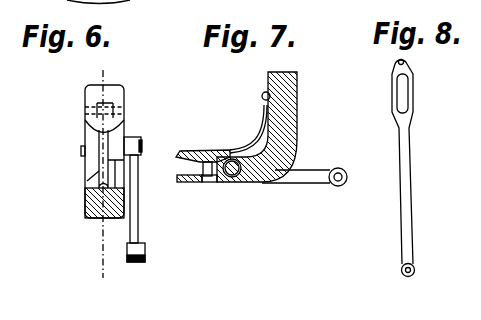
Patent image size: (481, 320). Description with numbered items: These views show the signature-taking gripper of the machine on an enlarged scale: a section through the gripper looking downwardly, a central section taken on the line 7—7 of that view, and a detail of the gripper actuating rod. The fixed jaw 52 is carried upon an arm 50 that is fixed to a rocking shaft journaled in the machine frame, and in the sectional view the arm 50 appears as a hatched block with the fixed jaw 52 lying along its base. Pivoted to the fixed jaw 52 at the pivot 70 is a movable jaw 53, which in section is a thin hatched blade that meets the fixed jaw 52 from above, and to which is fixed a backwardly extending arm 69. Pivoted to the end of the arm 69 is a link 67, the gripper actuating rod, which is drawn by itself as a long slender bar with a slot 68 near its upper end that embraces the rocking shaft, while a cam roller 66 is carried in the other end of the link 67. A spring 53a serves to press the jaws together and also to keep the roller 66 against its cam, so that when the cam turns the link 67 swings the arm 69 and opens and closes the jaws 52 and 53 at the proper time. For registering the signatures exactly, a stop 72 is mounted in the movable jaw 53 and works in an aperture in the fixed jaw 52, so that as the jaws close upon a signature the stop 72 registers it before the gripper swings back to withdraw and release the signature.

In FIG. 6, the section line 7— 7 is at (113, 179).
In FIG. 6, the arm 50 is at (87, 213).
In FIG. 7, the arm 50 is at (298, 105).
In FIG. 7, the fixed jaw 52 is at (194, 183).
In FIG. 6, the movable jaw 53 is at (92, 97).
In FIG. 7, the movable jaw 53 is at (180, 150).
In FIG. 7, the spring 53a is at (254, 146).
In FIG. 8, the cam roller 66 is at (407, 62).
In FIG. 8, the link 67 is at (407, 177).
In FIG. 8, the slot 68 is at (404, 97).
In FIG. 6, the backwardly extending arm 69 is at (138, 218).
In FIG. 7, the backwardly extending arm 69 is at (312, 184).
In FIG. 6, the pivot 70 is at (81, 150).
In FIG. 7, the pivot 70 is at (234, 183).
In FIG. 6, the stop 72 is at (85, 114).
In FIG. 7, the stop 72 is at (203, 168).